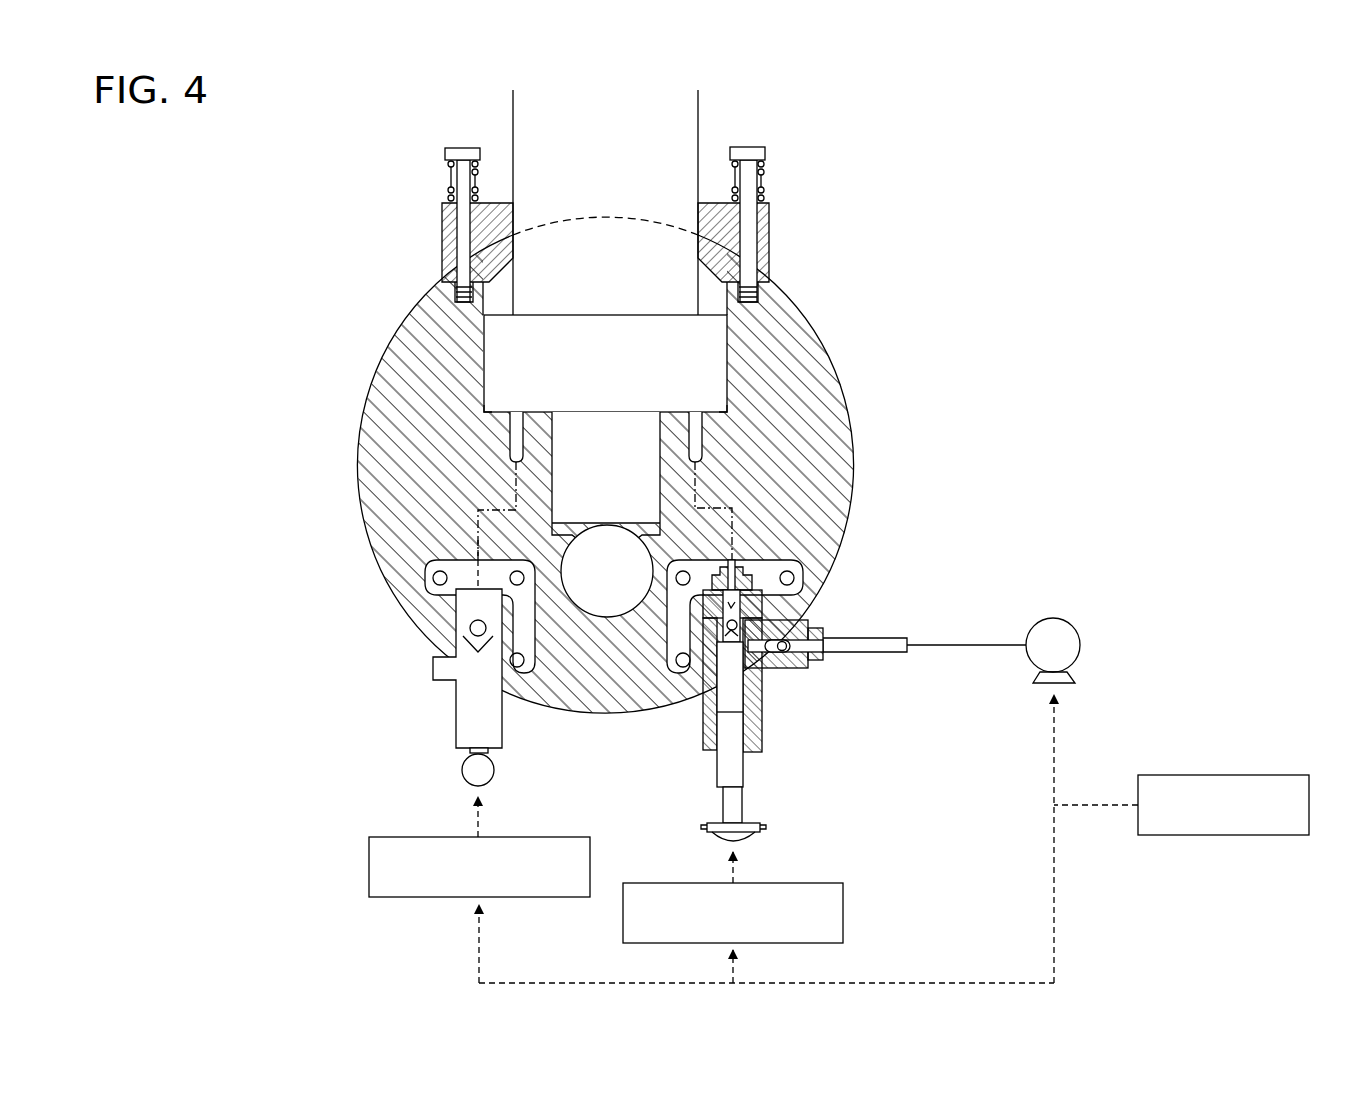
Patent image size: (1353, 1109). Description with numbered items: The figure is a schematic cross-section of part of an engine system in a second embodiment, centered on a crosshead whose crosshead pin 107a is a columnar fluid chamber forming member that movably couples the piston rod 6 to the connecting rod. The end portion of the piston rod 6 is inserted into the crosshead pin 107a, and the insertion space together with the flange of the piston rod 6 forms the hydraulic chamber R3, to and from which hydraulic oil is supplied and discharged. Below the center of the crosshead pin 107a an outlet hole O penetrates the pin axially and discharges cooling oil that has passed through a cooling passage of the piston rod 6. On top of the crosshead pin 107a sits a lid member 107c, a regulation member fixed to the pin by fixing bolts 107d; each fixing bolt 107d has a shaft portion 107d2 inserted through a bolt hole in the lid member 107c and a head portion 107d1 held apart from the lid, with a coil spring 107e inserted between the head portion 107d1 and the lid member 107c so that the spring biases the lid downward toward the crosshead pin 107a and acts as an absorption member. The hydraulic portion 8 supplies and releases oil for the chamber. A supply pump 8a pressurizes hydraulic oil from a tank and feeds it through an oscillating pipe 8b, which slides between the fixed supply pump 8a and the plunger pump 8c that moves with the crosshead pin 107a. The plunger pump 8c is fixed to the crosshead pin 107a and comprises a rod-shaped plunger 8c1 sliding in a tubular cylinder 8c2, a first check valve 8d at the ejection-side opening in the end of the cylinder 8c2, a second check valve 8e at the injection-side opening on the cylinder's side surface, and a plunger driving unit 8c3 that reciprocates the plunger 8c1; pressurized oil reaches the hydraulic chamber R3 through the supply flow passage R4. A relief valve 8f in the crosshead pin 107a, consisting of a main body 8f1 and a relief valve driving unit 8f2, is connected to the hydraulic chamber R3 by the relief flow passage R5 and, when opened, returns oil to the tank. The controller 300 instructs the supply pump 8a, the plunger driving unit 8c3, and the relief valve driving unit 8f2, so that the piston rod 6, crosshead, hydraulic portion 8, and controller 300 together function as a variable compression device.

The piston rod 6 is at (512, 107).
The hydraulic portion 8 is at (340, 618).
The supply pump 8a is at (1080, 642).
The oscillating pipe 8b is at (957, 645).
The plunger pump 8c is at (760, 708).
The plunger 8c1 is at (742, 805).
The cylinder 8c2 is at (750, 735).
The plunger driving unit 8c3 is at (845, 913).
The first check valve 8d is at (795, 603).
The second check valve 8e is at (790, 662).
The relief valve 8f is at (721, 718).
The main body 8f1 is at (456, 715).
The relief valve driving unit 8f2 is at (369, 866).
The crosshead pin 107a is at (407, 348).
The lid member 107c is at (768, 226).
The fixing bolt 107d is at (579, 195).
The head portion 107d1 is at (450, 150).
The shaft portion 107d2 is at (443, 232).
The coil spring 107e is at (447, 192).
The controller 300 is at (1262, 775).
The outlet hole O is at (600, 616).
The hydraulic chamber R3 is at (727, 410).
The supply flow passage R4 is at (698, 455).
The relief flow passage R5 is at (516, 458).